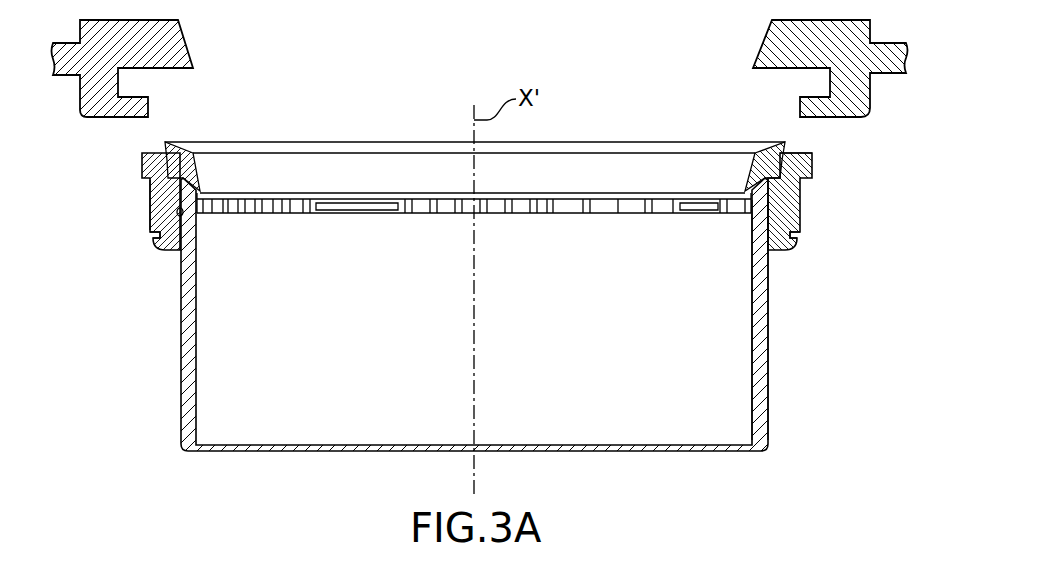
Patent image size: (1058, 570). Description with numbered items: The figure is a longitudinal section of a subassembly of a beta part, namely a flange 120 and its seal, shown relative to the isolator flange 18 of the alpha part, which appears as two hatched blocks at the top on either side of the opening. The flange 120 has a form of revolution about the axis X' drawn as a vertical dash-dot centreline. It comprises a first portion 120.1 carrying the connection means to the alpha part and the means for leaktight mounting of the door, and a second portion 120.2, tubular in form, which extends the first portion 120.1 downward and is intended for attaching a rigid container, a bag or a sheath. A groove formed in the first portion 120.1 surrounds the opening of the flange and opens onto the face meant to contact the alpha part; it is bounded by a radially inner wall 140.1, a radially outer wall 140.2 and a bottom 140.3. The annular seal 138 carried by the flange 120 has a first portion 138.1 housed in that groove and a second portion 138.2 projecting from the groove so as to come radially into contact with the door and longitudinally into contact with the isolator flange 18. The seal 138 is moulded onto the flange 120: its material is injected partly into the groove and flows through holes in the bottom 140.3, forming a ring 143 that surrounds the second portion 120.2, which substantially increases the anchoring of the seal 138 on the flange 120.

The isolator flange 18 is at (82, 110).
The flange 120 is at (792, 300).
The first portion 120.1 is at (804, 149).
The second portion 120.2 is at (763, 395).
The seal 138 is at (703, 190).
The first portion of the seal 138.1 is at (728, 142).
The second portion of the seal 138.2 is at (790, 197).
The radially inner wall 140.1 is at (182, 216).
The radially outer wall 140.2 is at (162, 176).
The bottom 140.3 is at (165, 205).
The ring 143 is at (165, 247).